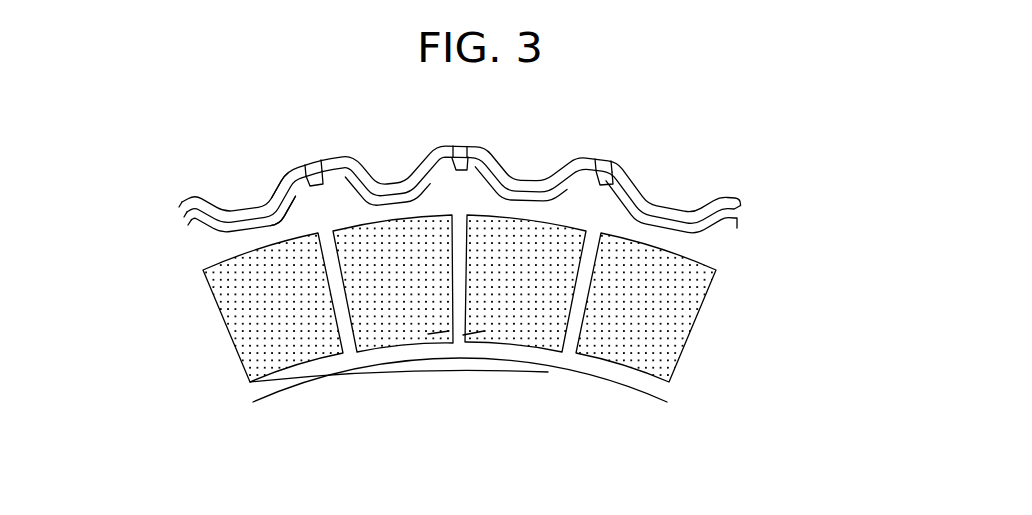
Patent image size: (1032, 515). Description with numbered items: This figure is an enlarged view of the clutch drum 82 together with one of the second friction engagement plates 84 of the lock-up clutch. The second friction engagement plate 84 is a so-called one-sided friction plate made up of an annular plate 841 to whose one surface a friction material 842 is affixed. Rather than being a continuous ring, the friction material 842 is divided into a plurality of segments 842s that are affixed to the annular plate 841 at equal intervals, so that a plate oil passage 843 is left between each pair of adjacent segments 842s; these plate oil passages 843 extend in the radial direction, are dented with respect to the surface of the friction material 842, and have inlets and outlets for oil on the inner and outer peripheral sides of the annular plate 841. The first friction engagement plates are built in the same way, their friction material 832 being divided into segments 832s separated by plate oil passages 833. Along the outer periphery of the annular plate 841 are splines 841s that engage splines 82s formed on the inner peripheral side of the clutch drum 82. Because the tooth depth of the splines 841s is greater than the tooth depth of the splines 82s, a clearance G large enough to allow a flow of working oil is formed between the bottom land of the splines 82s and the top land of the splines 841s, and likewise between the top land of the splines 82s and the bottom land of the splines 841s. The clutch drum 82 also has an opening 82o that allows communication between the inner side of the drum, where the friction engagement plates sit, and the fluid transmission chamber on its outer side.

The clutch drum 82 is at (662, 192).
The splines 82s is at (284, 178).
The opening 82o is at (306, 165).
The clearance G is at (513, 196).
The second friction engagement plate 84 is at (493, 350).
The annular plate 841 is at (612, 373).
The splines 841s is at (297, 208).
The friction material 842 is at (493, 333).
The friction material 832 is at (689, 346).
The segments 842s is at (472, 333).
The segments 832s is at (407, 439).
The plate oil passage 843 is at (345, 312).
The plate oil passage 833 is at (403, 465).